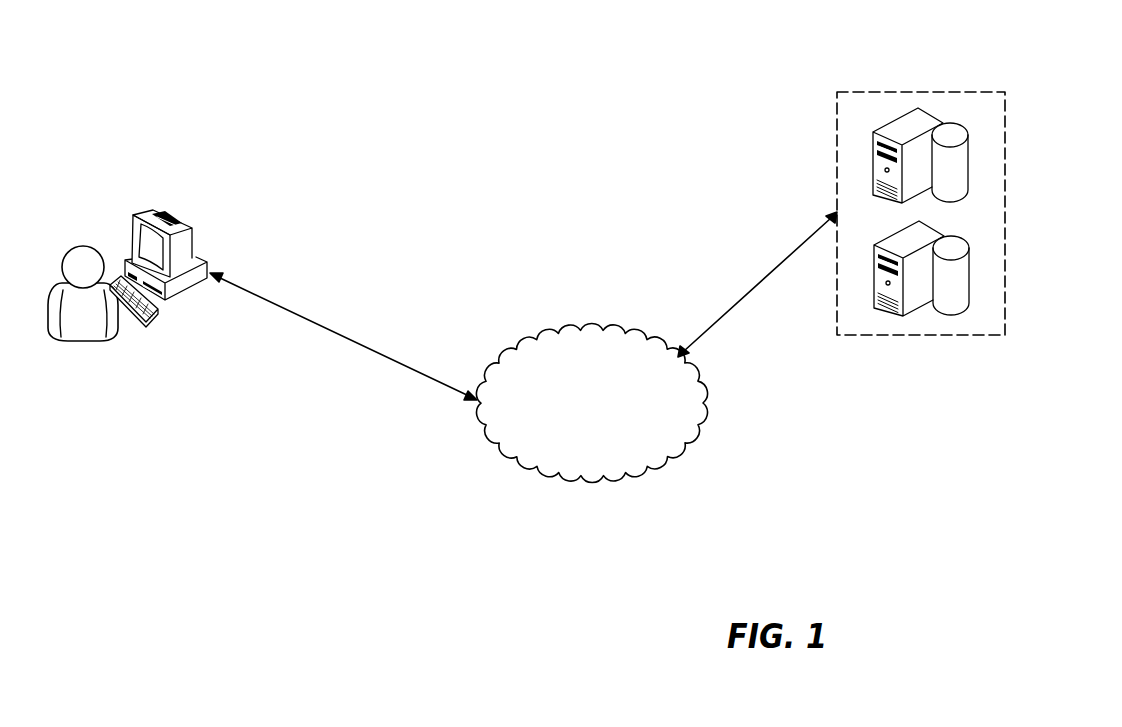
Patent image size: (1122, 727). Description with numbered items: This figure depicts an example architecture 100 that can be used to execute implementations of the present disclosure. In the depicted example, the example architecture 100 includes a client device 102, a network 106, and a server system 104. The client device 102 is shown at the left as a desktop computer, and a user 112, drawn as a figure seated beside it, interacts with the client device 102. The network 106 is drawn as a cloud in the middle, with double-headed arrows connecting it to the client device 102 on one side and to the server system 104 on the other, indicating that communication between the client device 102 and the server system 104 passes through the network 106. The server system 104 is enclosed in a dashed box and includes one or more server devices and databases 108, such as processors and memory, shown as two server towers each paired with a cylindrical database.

The example architecture 100 is at (438, 84).
The client device 102 is at (132, 220).
The server system 104 is at (1005, 213).
The network 106 is at (597, 327).
The server devices and databases 108 is at (873, 157).
The user 112 is at (83, 343).